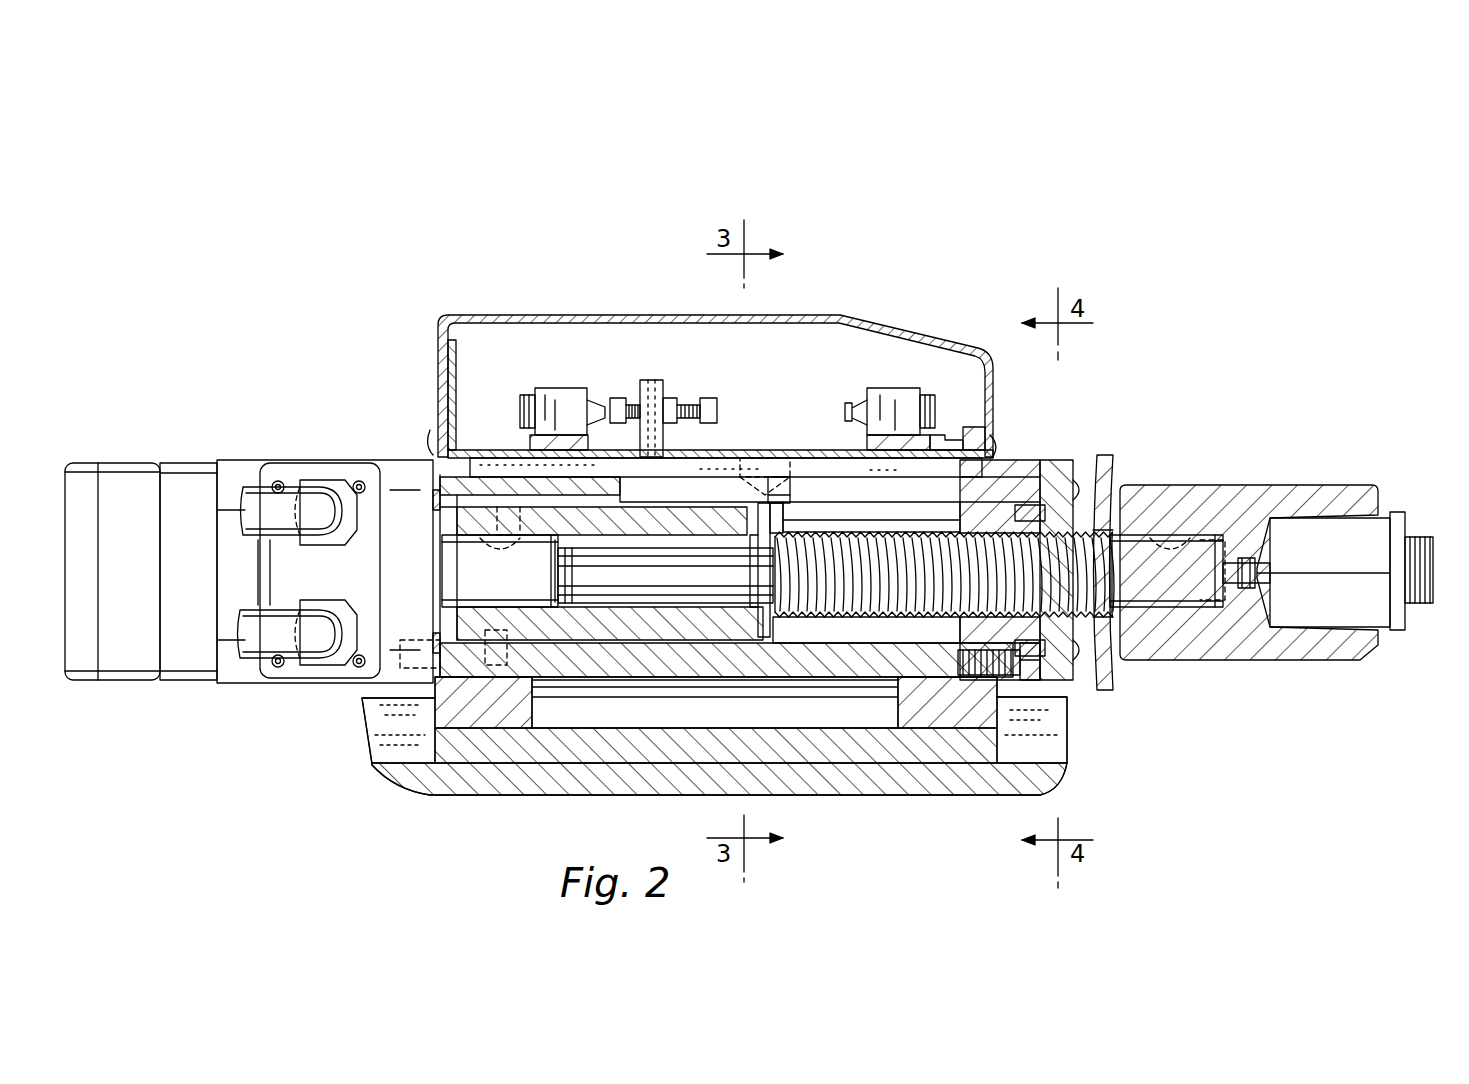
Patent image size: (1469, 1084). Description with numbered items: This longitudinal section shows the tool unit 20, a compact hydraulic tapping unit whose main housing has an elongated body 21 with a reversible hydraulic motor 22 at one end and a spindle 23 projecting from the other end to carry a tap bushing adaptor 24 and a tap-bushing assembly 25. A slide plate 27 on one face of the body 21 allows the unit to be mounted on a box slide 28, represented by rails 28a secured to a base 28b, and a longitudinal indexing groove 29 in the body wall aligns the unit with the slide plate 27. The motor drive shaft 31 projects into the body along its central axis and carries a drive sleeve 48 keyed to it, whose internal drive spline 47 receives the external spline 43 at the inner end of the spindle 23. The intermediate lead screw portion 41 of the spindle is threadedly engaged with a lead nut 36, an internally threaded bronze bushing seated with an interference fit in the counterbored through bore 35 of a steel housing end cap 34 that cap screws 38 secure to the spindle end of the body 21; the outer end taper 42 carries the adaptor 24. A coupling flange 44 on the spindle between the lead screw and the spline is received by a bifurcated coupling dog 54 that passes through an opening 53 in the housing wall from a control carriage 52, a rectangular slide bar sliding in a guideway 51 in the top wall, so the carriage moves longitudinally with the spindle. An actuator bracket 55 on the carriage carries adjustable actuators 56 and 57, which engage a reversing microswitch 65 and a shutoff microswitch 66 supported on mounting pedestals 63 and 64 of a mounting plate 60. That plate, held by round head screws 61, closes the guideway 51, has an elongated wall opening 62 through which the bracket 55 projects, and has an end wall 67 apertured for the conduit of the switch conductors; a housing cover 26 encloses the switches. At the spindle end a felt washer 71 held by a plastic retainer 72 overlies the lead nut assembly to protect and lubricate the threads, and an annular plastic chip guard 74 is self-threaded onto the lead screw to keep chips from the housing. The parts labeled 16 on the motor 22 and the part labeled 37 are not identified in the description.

The motor terminals 16 is at (290, 500).
The tool unit 20 is at (928, 314).
The elongated body 21 is at (825, 680).
The reversible hydraulic motor 22 is at (190, 470).
The spindle 23 is at (863, 608).
The tap bushing adaptor 24 is at (1272, 490).
The tap-bushing assembly 25 is at (1400, 512).
The housing cover 26 is at (648, 318).
The slide plate 27 is at (575, 765).
The box slide 28 is at (1016, 798).
The rails 28a is at (375, 752).
The base 28b is at (478, 790).
The longitudinal indexing groove 29 is at (660, 690).
The motor drive shaft 31 is at (500, 588).
The housing end cap 34 is at (1020, 510).
The counterbored through bore 35 is at (965, 622).
The lead nut 36 is at (972, 520).
The retainer 37 is at (1050, 500).
The cap screws 38 is at (1045, 695).
The lead screw portion 41 is at (855, 620).
The outer end taper 42 is at (1160, 600).
The external spline 43 is at (746, 590).
The coupling flange 44 is at (776, 527).
The internal drive spline 47 is at (718, 545).
The drive sleeve 48 is at (658, 518).
The guideway 51 is at (887, 475).
The control carriage 52 is at (718, 470).
The opening 53 is at (912, 492).
The coupling dog 54 is at (780, 503).
The actuator bracket 55 is at (660, 390).
The adjustable actuator 56 is at (703, 405).
The adjustable actuator 57 is at (618, 397).
The mounting plate 60 is at (465, 452).
The round head screws 61 is at (950, 450).
The wall opening 62 is at (838, 455).
The mounting pedestal 63 is at (932, 440).
The mounting pedestal 64 is at (530, 447).
The reversing microswitch 65 is at (888, 395).
The shutoff microswitch 66 is at (575, 395).
The end wall 67 is at (437, 363).
The felt washer 71 is at (1050, 668).
The retainer 72 is at (1072, 660).
The chip guard 74 is at (1108, 467).